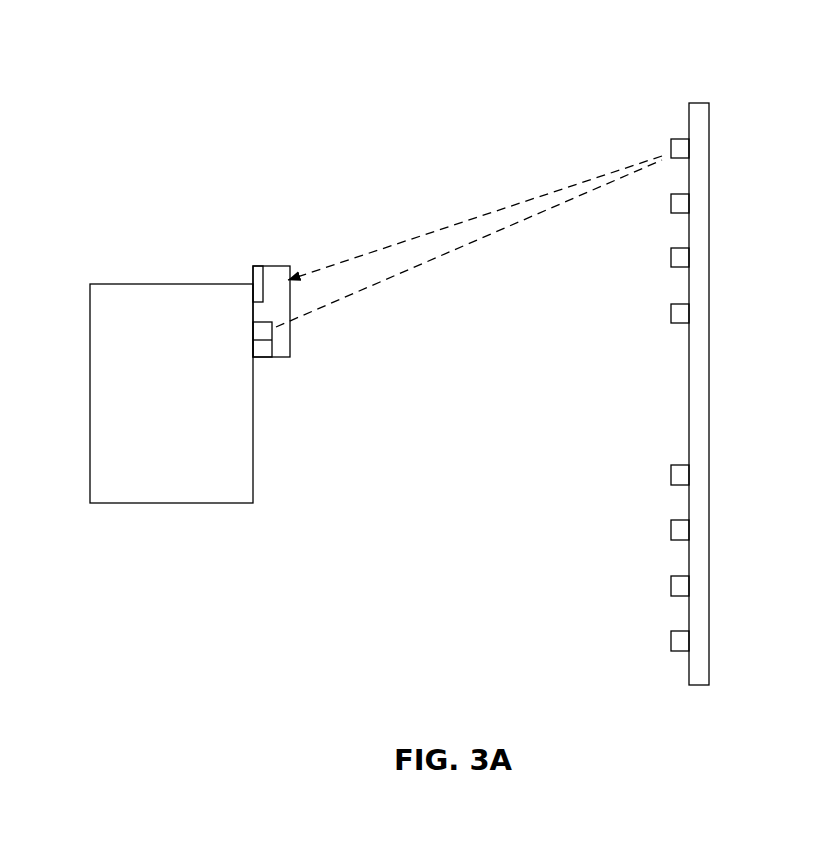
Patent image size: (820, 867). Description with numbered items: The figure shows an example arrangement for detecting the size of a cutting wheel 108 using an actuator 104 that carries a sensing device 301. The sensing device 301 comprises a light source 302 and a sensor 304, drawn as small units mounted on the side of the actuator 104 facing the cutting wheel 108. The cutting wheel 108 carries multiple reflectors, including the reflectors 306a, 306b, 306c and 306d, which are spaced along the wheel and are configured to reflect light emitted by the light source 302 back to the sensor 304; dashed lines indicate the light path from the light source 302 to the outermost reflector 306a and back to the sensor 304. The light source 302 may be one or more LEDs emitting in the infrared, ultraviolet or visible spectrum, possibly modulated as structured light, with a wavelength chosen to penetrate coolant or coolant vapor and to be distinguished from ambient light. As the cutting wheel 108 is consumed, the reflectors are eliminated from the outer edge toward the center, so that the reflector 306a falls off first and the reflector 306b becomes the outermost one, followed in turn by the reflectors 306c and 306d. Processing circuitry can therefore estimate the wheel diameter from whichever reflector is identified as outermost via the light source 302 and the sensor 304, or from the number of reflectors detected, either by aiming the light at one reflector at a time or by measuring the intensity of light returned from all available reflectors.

The actuator 104 is at (154, 416).
The cutting wheel 108 is at (735, 370).
The sensing device 301 is at (243, 265).
The light source 302 is at (271, 340).
The sensor 304 is at (265, 283).
The reflector 306a is at (660, 147).
The reflector 306b is at (653, 213).
The reflector 306c is at (653, 268).
The reflector 306d is at (653, 330).